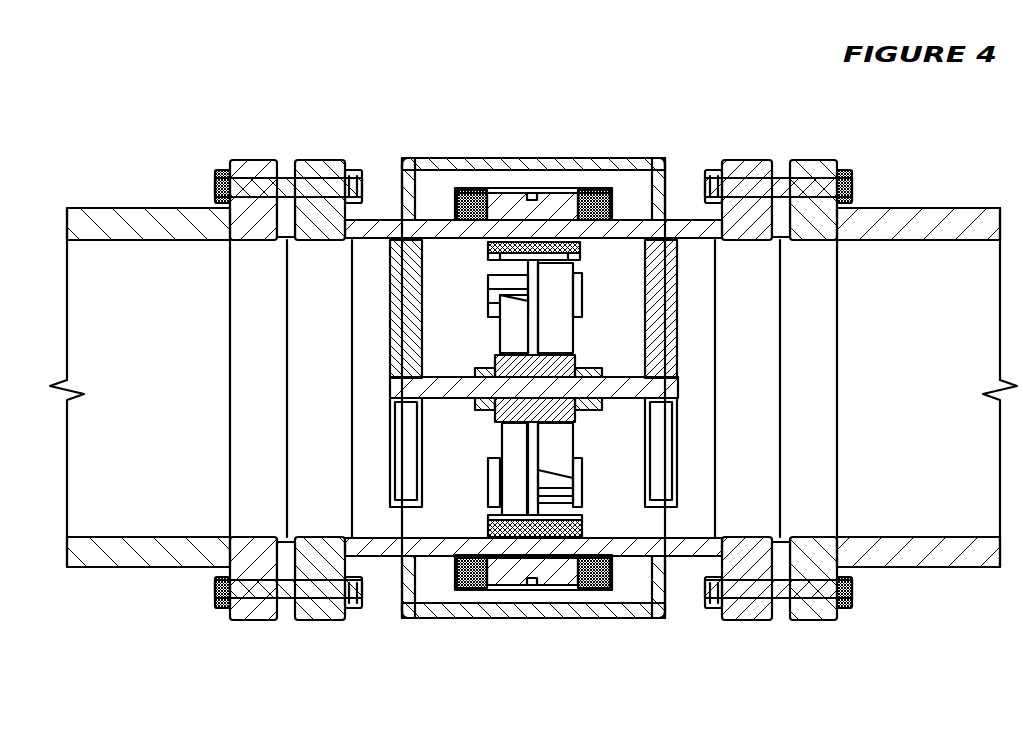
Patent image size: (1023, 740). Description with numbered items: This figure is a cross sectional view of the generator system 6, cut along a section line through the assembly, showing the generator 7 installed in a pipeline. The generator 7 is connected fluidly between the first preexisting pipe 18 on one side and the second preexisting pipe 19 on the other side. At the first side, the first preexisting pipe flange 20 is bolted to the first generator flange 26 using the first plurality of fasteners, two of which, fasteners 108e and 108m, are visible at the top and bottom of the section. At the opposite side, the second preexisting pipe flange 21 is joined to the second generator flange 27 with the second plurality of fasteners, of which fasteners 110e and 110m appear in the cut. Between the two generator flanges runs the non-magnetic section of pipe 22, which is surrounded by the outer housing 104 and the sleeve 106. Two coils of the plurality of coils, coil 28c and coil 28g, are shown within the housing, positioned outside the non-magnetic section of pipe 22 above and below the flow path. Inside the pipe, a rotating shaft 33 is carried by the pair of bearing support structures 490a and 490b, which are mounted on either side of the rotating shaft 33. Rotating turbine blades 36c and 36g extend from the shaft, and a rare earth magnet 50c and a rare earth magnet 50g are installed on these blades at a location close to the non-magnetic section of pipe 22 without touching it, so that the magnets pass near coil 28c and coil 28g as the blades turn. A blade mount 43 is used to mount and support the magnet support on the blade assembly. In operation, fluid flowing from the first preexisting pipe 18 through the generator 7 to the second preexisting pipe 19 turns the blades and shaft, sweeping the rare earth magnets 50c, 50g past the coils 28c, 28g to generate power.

The generator system 6 is at (65, 122).
The generator 7 is at (624, 78).
The first preexisting pipe 18 is at (170, 208).
The second preexisting pipe 19 is at (902, 208).
The first preexisting pipe flange 20 is at (256, 160).
The second preexisting pipe flange 21 is at (814, 160).
The non-magnetic section of pipe 22 is at (616, 220).
The first generator flange 26 is at (322, 160).
The second generator flange 27 is at (746, 160).
The coil 28c is at (458, 205).
The coil 28g is at (458, 570).
The rotating shaft 33 is at (450, 378).
The rotating turbine blade 36c is at (558, 328).
The rotating turbine blade 36g is at (507, 452).
The blade mount 43 is at (520, 355).
The rare earth magnet 50c is at (520, 240).
The rare earth magnet 50g is at (518, 540).
The outer housing 104 is at (612, 160).
The sleeve 106 is at (556, 190).
The fastener 108e is at (216, 185).
The fastener 108m is at (217, 592).
The fastener 110e is at (850, 186).
The fastener 110m is at (850, 592).
The bearing support structure 490a is at (422, 283).
The bearing support structure 490b is at (648, 283).